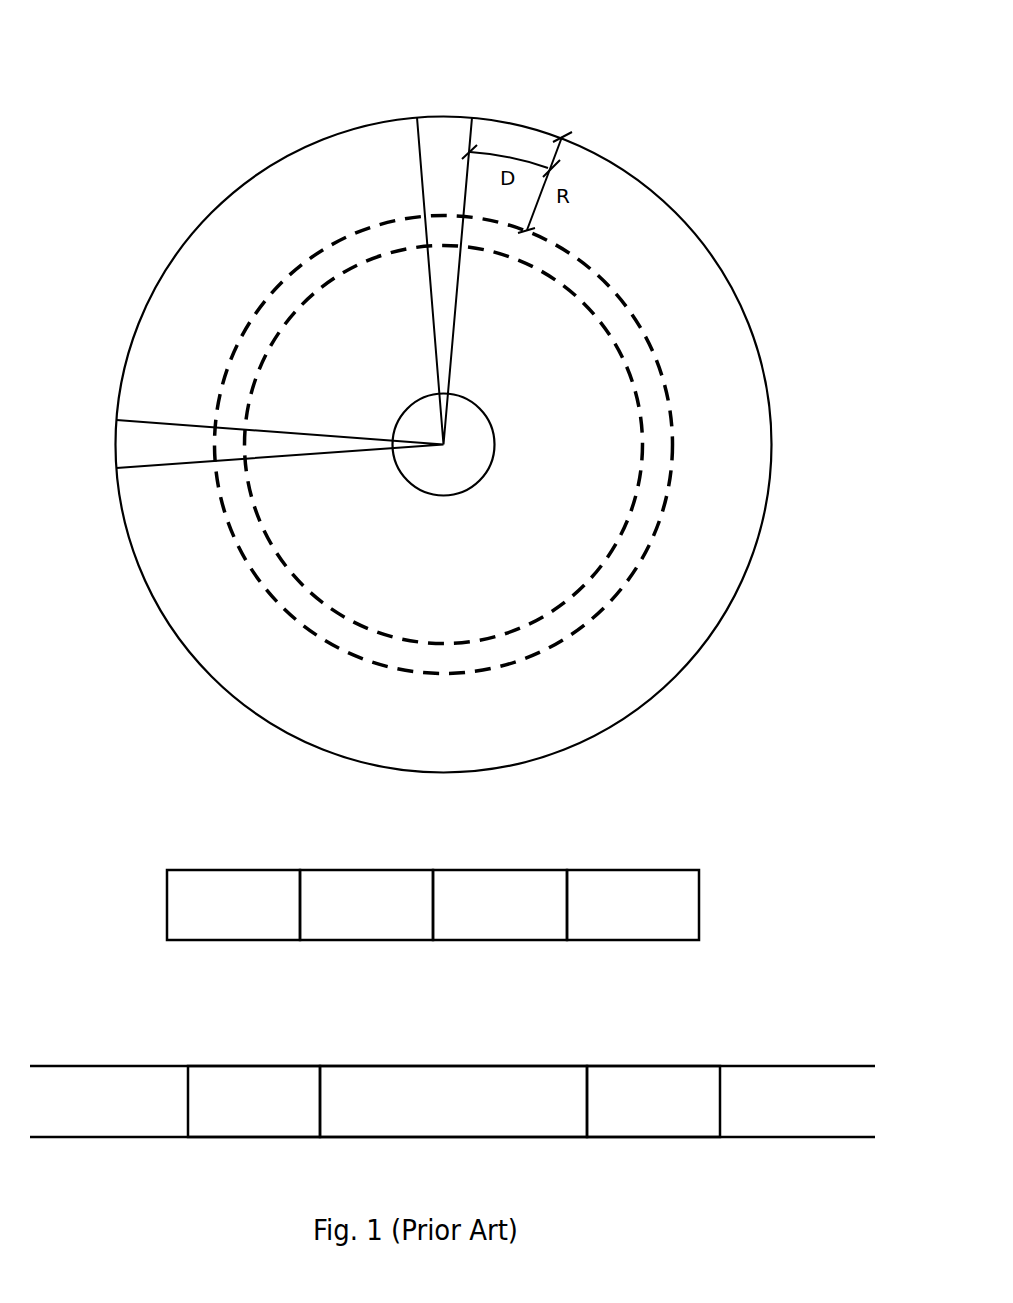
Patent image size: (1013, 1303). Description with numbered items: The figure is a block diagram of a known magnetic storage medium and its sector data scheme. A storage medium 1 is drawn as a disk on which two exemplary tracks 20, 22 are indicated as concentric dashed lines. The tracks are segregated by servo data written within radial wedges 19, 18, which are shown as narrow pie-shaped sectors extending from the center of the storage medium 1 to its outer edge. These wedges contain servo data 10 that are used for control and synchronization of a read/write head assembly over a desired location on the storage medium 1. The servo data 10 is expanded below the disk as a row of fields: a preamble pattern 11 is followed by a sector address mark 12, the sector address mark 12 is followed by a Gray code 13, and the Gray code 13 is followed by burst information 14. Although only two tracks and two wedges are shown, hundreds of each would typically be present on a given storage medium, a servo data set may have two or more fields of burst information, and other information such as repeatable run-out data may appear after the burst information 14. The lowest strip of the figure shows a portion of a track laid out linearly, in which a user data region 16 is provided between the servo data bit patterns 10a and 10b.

The storage medium 1 is at (121, 82).
The wedge 18 is at (441, 126).
The wedge 19 is at (123, 449).
The track 20 is at (606, 324).
The track 22 is at (591, 268).
The servo data 10 is at (433, 869).
The preamble pattern 11 is at (233, 905).
The sector address mark 12 is at (366, 905).
The Gray code 13 is at (500, 905).
The burst information 14 is at (633, 905).
The servo data bit pattern 10a is at (254, 1101).
The user data region 16 is at (453, 1101).
The servo data bit pattern 10b is at (653, 1101).